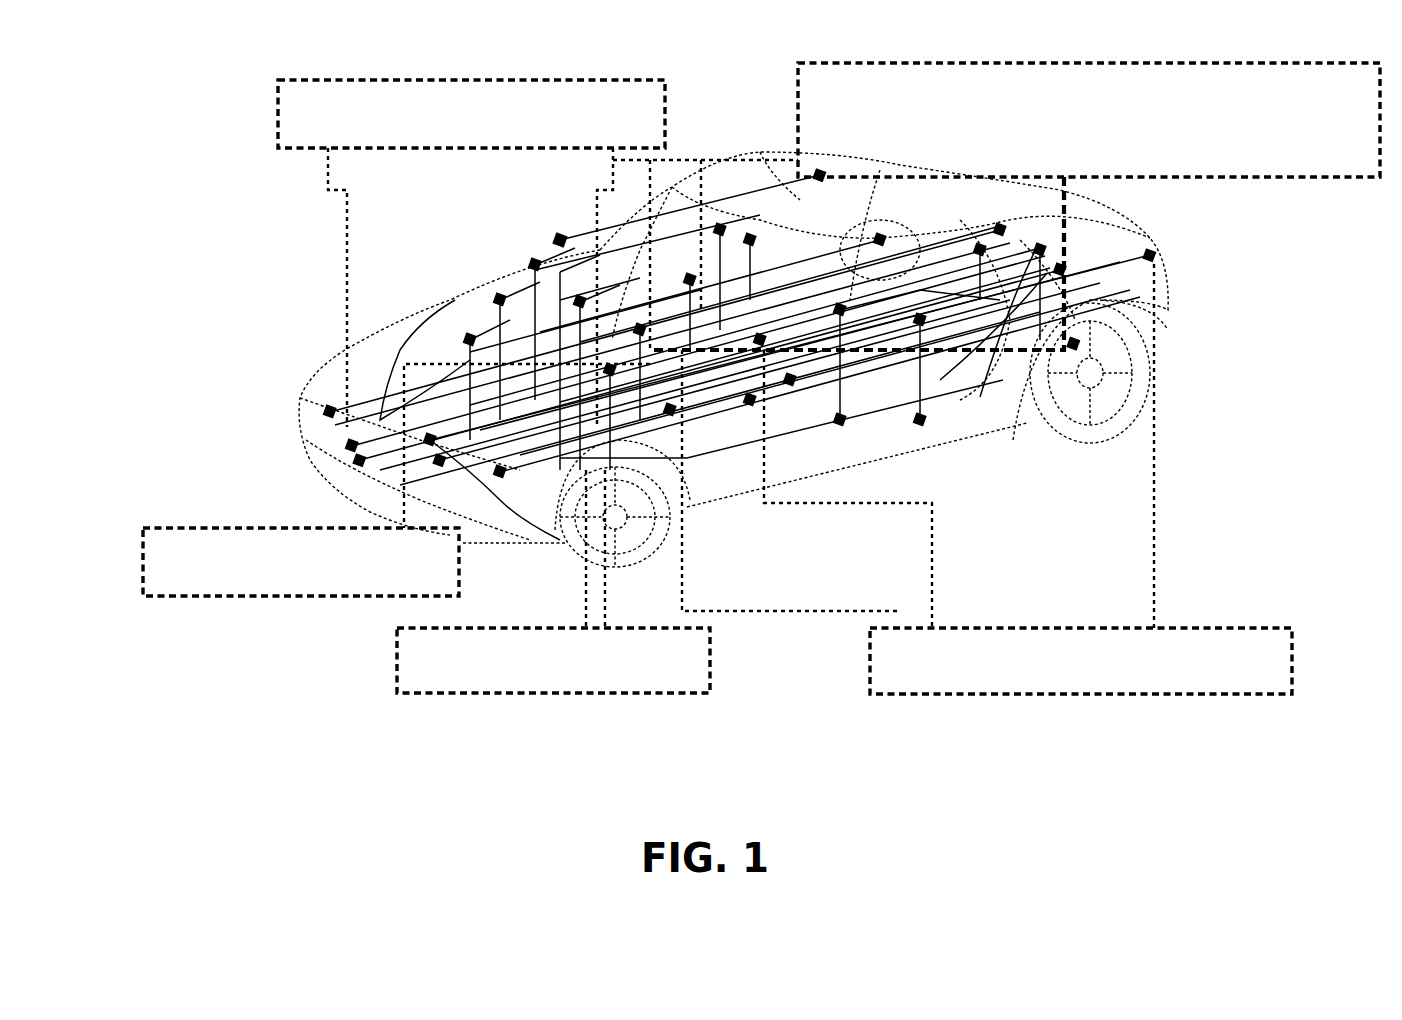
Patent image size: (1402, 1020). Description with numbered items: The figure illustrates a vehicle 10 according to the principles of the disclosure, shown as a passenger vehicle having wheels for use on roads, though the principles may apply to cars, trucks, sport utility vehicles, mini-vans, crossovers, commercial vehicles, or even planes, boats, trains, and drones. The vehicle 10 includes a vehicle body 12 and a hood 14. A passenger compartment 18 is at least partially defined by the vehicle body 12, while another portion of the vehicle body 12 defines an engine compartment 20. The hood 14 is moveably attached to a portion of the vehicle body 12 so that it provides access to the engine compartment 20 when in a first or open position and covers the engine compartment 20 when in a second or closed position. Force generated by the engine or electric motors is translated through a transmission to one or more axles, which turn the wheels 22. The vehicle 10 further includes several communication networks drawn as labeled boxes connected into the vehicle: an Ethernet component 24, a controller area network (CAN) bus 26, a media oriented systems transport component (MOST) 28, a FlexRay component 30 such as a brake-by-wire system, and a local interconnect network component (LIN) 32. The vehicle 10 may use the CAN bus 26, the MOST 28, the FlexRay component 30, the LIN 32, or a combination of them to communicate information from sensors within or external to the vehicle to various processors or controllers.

The vehicle 10 is at (85, 157).
The vehicle body 12 is at (884, 329).
The hood 14 is at (447, 300).
The passenger compartment 18 is at (616, 240).
The engine compartment 20 is at (322, 352).
The wheels 22 is at (560, 525).
The Ethernet component 24 is at (132, 545).
The controller area network (CAN) bus 26 is at (270, 86).
The media oriented systems transport component (MOST) 28 is at (810, 48).
The FlexRay component 30 is at (385, 662).
The local interconnect network component (LIN) 32 is at (860, 668).